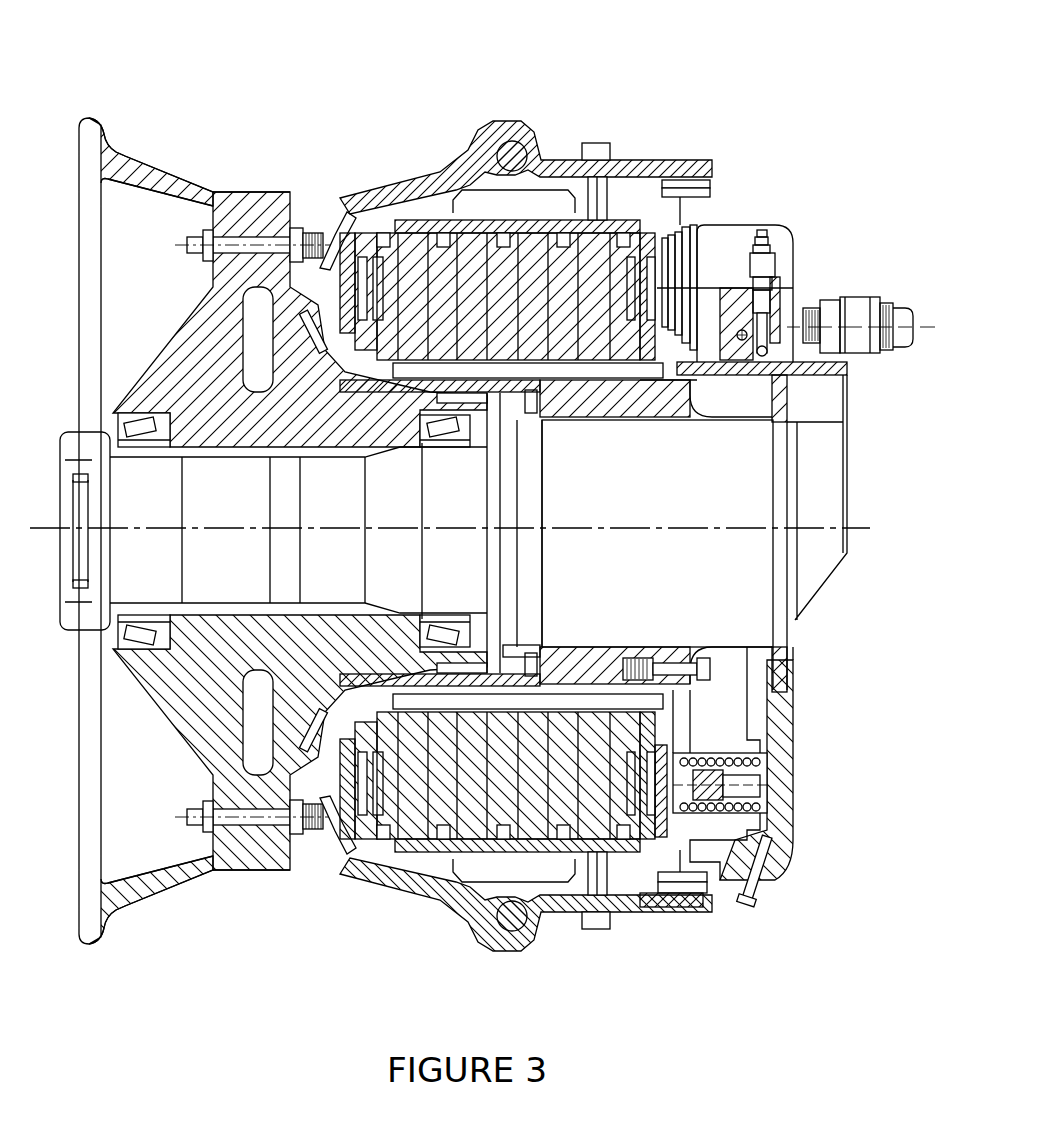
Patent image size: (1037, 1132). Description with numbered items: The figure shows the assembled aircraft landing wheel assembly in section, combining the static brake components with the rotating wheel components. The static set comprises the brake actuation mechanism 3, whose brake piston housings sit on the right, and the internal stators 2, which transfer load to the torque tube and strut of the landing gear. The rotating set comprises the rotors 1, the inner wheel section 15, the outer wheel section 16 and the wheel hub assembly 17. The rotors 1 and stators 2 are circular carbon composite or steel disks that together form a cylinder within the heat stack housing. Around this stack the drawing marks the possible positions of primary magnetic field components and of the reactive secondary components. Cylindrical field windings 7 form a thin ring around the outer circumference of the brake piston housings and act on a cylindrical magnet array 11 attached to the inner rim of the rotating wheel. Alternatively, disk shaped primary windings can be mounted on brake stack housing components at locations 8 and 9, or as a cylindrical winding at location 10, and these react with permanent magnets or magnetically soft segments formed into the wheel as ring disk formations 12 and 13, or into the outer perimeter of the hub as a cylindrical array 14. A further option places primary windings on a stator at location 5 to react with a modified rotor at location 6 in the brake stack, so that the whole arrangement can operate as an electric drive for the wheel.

The rotors 1 is at (562, 177).
The stators 2 is at (477, 225).
The brake actuation mechanism 3 is at (793, 788).
The primary field winding location on stator 5 is at (367, 213).
The magnetically modified rotor location 6 is at (532, 235).
The cylindrical field windings 7 is at (712, 193).
The disk shaped field winding location 8 is at (347, 217).
The disk shaped field winding location 9 is at (313, 287).
The cylindrical field winding location 10 is at (515, 415).
The inner rim magnet array 11 is at (712, 180).
The ring disk magnet formation 12 is at (333, 213).
The ring disk magnet formation 13 is at (307, 330).
The hub perimeter magnet array 14 is at (492, 413).
The inner wheel section 15 is at (393, 210).
The outer wheel section 16 is at (177, 170).
The wheel hub assembly 17 is at (270, 550).